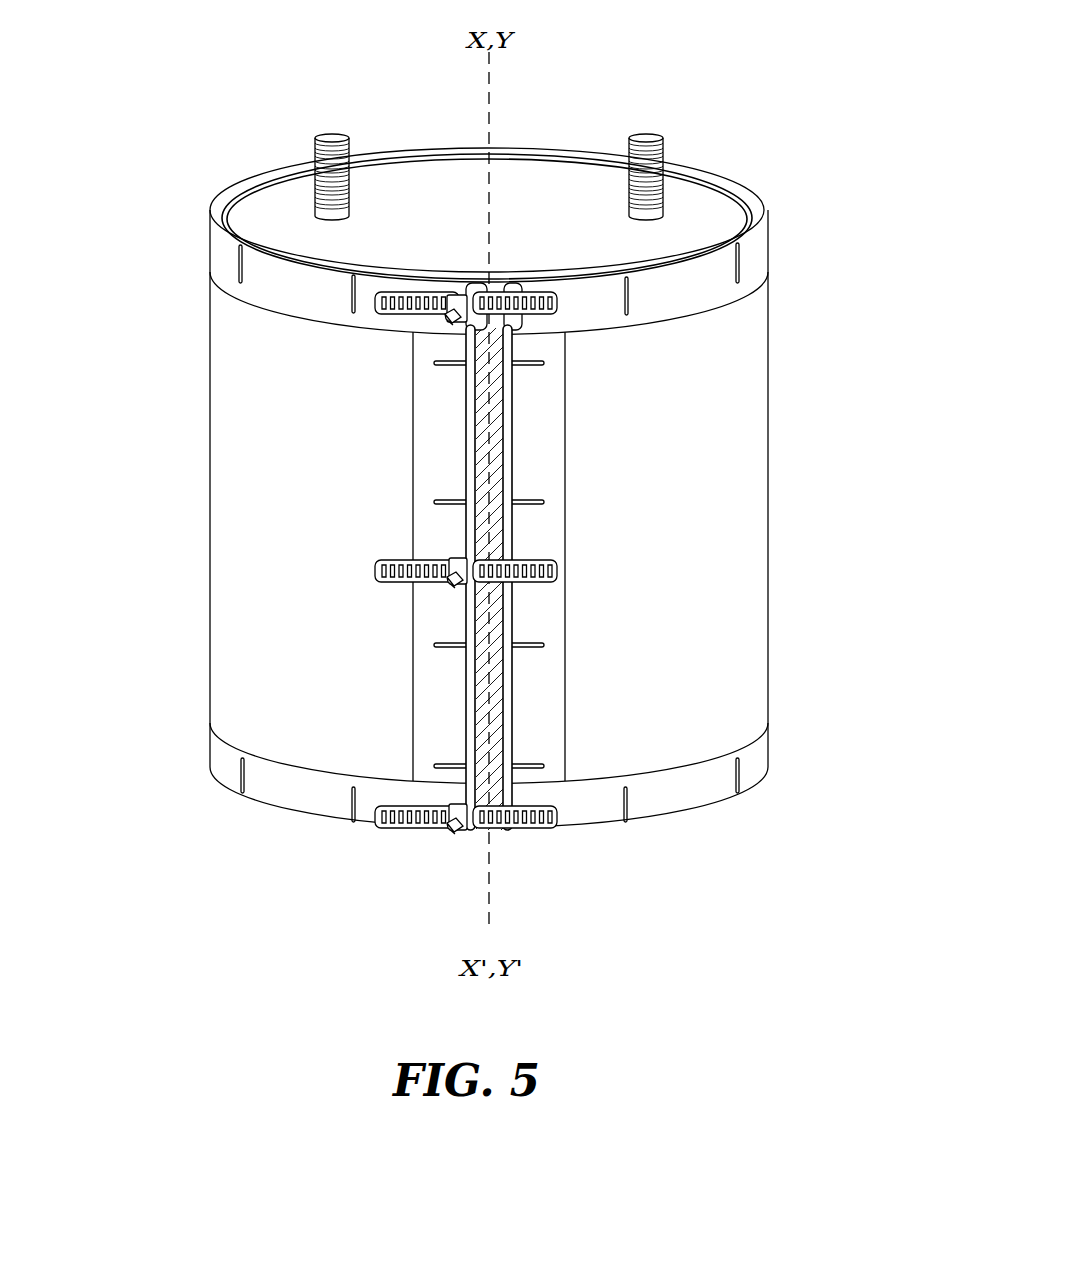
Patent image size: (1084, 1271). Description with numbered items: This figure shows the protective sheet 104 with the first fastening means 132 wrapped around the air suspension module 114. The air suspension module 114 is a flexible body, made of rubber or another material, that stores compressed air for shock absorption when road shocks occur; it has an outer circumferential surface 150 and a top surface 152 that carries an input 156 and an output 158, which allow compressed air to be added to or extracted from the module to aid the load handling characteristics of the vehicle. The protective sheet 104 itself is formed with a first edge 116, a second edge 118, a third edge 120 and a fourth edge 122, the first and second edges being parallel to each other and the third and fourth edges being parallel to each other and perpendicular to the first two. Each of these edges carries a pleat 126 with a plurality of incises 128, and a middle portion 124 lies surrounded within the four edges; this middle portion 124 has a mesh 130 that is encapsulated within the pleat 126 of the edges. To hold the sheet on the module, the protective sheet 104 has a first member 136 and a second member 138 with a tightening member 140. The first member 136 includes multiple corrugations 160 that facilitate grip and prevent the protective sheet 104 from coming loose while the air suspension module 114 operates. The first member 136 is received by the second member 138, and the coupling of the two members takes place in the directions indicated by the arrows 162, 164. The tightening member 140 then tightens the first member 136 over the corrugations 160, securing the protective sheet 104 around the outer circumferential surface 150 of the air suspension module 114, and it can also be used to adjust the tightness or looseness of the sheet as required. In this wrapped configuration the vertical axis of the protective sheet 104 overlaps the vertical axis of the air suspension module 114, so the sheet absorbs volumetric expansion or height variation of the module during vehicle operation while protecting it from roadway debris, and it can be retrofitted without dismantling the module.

The protective sheet 104 is at (768, 562).
The air suspension module 114 is at (694, 222).
The first edge 116 is at (522, 781).
The second edge 118 is at (458, 779).
The third edge 120 is at (767, 784).
The fourth edge 122 is at (776, 208).
The middle portion 124 is at (757, 468).
The pleat 126 is at (602, 150).
The incises 128 is at (748, 190).
The mesh 130 is at (733, 710).
The first fastening means 132 is at (478, 276).
The first member 136 is at (557, 304).
The second member 138 is at (450, 306).
The tightening member 140 is at (470, 313).
The outer circumferential surface 150 is at (483, 343).
The top surface 152 is at (443, 157).
The input 156 is at (315, 153).
The output 158 is at (662, 152).
The corrugations 160 is at (525, 302).
The arrows 162 is at (511, 482).
The arrows 164 is at (468, 482).